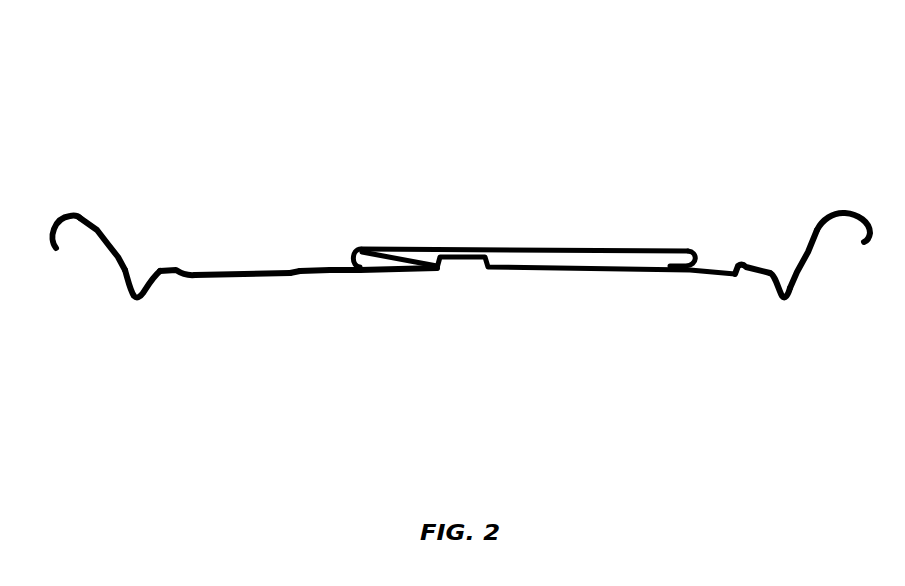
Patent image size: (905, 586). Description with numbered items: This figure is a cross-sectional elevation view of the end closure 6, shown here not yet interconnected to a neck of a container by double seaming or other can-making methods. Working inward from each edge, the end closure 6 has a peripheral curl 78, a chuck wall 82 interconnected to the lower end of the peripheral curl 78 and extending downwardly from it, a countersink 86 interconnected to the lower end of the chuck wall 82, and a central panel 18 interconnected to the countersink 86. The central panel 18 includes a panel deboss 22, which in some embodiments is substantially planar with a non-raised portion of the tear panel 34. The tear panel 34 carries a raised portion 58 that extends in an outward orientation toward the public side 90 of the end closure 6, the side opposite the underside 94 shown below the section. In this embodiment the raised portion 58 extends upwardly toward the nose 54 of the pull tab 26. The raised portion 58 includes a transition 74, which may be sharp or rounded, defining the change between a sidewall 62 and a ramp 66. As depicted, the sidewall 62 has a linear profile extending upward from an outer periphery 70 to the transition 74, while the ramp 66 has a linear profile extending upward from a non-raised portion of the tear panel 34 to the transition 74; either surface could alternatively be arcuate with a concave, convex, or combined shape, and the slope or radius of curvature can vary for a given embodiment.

The end closure 6 is at (484, 82).
The central panel 18 is at (168, 270).
The panel deboss 22 is at (708, 273).
The pull tab 26 is at (443, 247).
The tear panel 34 is at (213, 275).
The nose 54 is at (357, 249).
The raised portion 58 is at (288, 275).
The sidewall 62 is at (347, 272).
The ramp 66 is at (300, 267).
The outer periphery 70 is at (351, 272).
The transition 74 is at (338, 268).
The peripheral curl 78 is at (80, 218).
The chuck wall 82 is at (118, 257).
The countersink 86 is at (135, 297).
The public side 90 is at (470, 146).
The lower side 94 is at (472, 326).